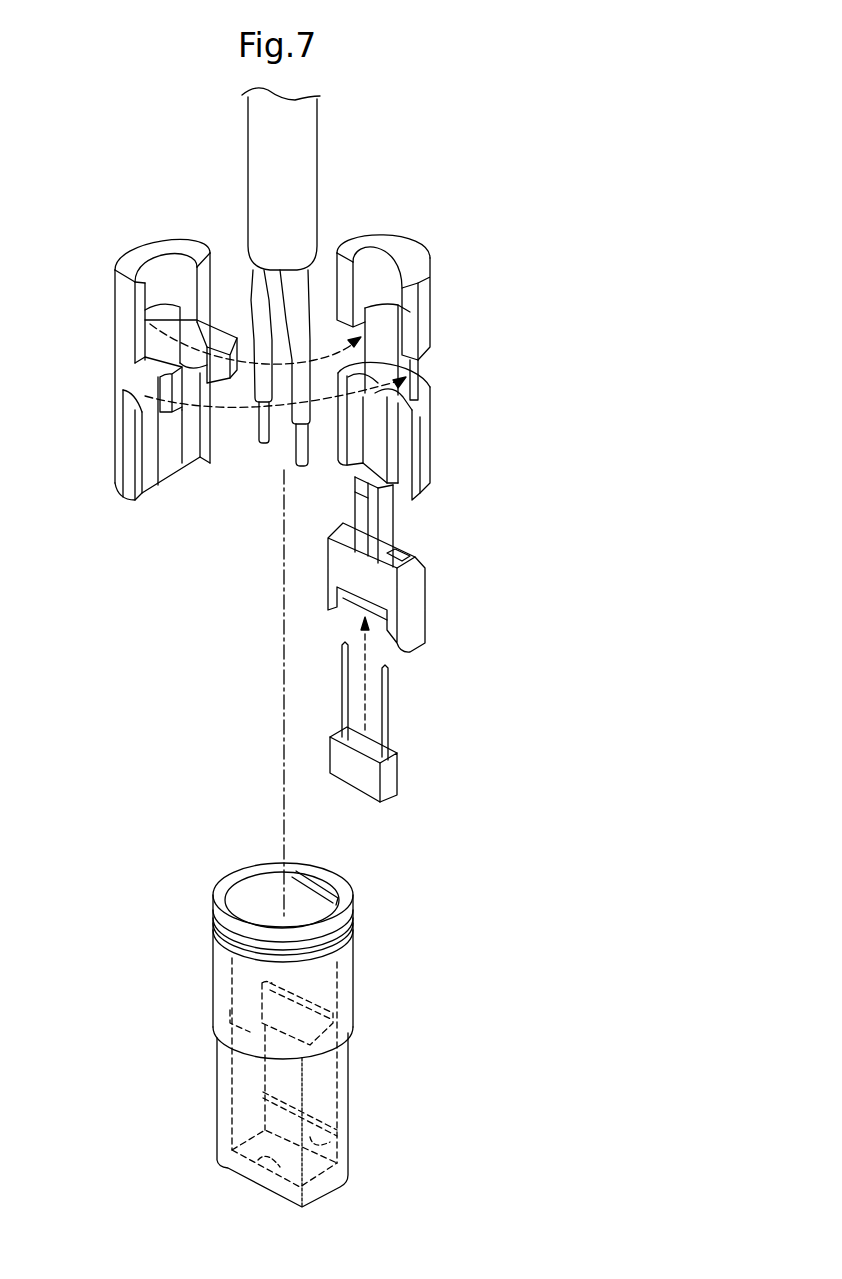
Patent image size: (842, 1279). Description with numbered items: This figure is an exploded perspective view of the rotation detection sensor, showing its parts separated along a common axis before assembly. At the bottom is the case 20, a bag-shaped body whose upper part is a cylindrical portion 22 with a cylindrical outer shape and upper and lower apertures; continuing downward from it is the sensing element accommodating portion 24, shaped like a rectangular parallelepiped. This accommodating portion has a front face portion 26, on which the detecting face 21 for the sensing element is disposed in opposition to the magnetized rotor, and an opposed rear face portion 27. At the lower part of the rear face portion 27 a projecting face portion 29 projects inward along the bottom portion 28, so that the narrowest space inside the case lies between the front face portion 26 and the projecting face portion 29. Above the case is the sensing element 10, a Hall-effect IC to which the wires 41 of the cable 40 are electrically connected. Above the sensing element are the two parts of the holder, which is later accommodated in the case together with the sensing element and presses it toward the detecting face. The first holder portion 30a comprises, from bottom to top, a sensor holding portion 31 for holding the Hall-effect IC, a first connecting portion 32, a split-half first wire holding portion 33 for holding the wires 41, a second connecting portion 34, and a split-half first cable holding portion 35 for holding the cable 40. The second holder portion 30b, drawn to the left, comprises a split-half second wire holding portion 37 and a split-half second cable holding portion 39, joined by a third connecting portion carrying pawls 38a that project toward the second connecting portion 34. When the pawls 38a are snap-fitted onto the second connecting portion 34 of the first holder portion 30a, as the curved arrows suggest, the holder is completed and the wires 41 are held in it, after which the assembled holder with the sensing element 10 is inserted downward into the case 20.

The sensing element 10 is at (350, 772).
The case 20 is at (300, 1024).
The detecting face 21 is at (245, 1132).
The cylindrical portion 22 is at (237, 877).
The sensing element accommodating portion 24 is at (254, 1005).
The front face portion 26 is at (243, 1078).
The rear face portion 27 is at (347, 1072).
The bottom portion 28 is at (233, 1172).
The projecting face portion 29 is at (348, 1165).
The first holder portion 30a is at (420, 283).
The second holder portion 30b is at (142, 326).
The sensor holding portion 31 is at (420, 612).
The first connecting portion 32 is at (392, 515).
The first wire holding portion 33 is at (432, 438).
The second connecting portion 34 is at (420, 373).
The first cable holding portion 35 is at (425, 315).
The second wire holding portion 37 is at (122, 443).
The pawl 38a is at (182, 360).
The second cable holding portion 39 is at (123, 262).
The cable 40 is at (318, 132).
The wires 41 is at (298, 447).